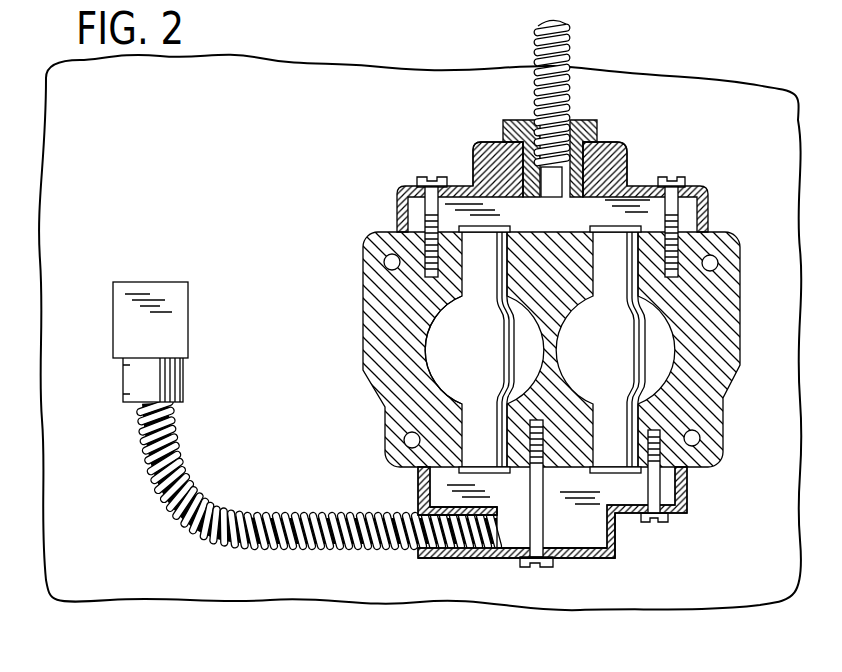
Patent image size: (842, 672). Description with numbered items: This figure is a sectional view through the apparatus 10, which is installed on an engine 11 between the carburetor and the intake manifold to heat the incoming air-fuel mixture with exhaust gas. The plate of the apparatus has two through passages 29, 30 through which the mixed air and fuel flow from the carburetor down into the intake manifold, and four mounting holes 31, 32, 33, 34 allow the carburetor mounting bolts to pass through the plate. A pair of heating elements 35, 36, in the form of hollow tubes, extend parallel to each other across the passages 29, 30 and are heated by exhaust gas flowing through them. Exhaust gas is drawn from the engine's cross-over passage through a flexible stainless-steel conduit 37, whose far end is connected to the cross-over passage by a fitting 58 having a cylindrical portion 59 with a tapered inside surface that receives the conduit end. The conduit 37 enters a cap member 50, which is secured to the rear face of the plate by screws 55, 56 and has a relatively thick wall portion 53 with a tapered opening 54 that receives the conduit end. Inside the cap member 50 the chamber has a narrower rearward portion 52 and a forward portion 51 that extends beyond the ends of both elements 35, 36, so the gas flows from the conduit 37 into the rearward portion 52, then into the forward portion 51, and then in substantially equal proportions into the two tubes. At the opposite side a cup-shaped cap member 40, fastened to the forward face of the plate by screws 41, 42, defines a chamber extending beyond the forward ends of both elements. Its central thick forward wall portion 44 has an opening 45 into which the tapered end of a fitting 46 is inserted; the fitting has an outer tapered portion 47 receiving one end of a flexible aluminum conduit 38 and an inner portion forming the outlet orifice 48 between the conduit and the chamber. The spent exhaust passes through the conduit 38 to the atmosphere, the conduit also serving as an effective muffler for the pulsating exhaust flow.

The apparatus 10 is at (152, 516).
The engine 11 is at (340, 56).
The through passage 29 is at (437, 352).
The through passage 30 is at (667, 340).
The mounting hole 31 is at (390, 262).
The mounting hole 32 is at (710, 263).
The mounting hole 33 is at (410, 440).
The mounting hole 34 is at (692, 438).
The heating element 35 is at (477, 322).
The heating element 36 is at (625, 325).
The conduit 37 is at (350, 552).
The conduit 38 is at (569, 68).
The cap member 40 is at (634, 181).
The screw 41 is at (422, 182).
The screw 42 is at (682, 183).
The forward wall portion 44 is at (474, 157).
The opening 45 is at (626, 165).
The fitting 46 is at (600, 118).
The outer tapered portion 47 is at (541, 128).
The outlet orifice 48 is at (547, 213).
The cap member 50 is at (694, 498).
The forward chamber portion 51 is at (620, 487).
The rearward chamber portion 52 is at (598, 547).
The wall portion 53 is at (467, 558).
The tapered opening 54 is at (447, 558).
The screw 55 is at (546, 565).
The screw 56 is at (668, 514).
The fitting 58 is at (192, 286).
The cylindrical portion 59 is at (150, 378).